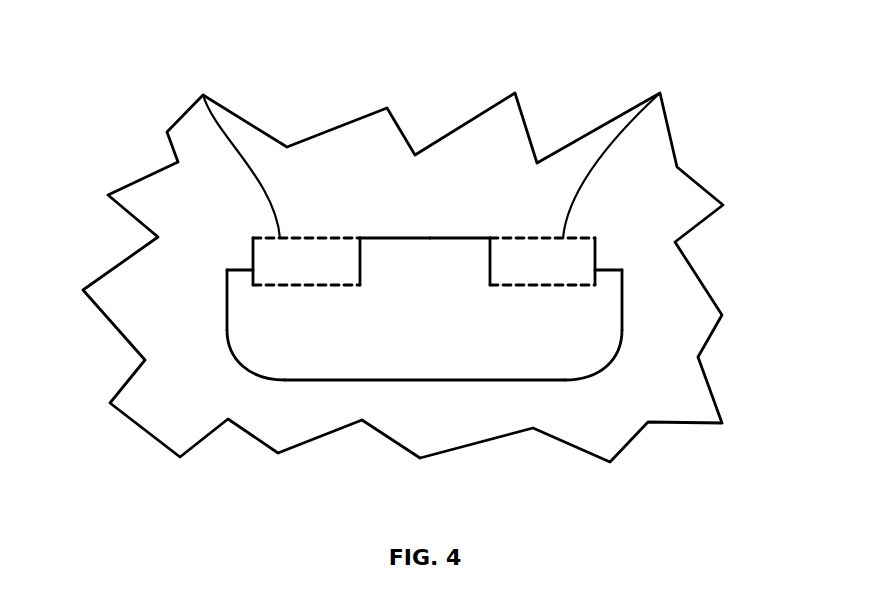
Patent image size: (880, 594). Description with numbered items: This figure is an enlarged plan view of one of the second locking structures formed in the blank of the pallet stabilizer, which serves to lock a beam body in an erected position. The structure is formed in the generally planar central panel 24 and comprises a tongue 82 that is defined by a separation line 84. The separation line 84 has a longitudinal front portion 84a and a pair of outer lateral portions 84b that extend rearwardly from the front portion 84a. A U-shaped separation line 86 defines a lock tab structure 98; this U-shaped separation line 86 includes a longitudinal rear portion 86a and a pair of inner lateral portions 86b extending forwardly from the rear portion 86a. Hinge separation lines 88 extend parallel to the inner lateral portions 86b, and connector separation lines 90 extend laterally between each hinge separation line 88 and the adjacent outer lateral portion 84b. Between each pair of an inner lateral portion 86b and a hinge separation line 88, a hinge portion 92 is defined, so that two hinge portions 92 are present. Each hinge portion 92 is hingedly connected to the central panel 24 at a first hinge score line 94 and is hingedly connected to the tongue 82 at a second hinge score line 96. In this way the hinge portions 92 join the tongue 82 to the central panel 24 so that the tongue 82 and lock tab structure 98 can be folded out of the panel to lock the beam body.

The central panel 24 is at (353, 145).
The tongue 82 is at (562, 335).
The separation line 84 is at (496, 384).
The longitudinal front portion 84a is at (325, 380).
The outer lateral portions 84b is at (227, 300).
The U-shaped separation line 86 is at (393, 236).
The longitudinal rear portion 86a is at (452, 238).
The inner lateral portions 86b is at (360, 263).
The hinge separation lines 88 is at (253, 248).
The connector separation lines 90 is at (229, 271).
The hinge portions 92 is at (323, 263).
The first hinge score line 94 is at (203, 94).
The second hinge score line 96 is at (307, 285).
The lock tab structure 98 is at (425, 262).